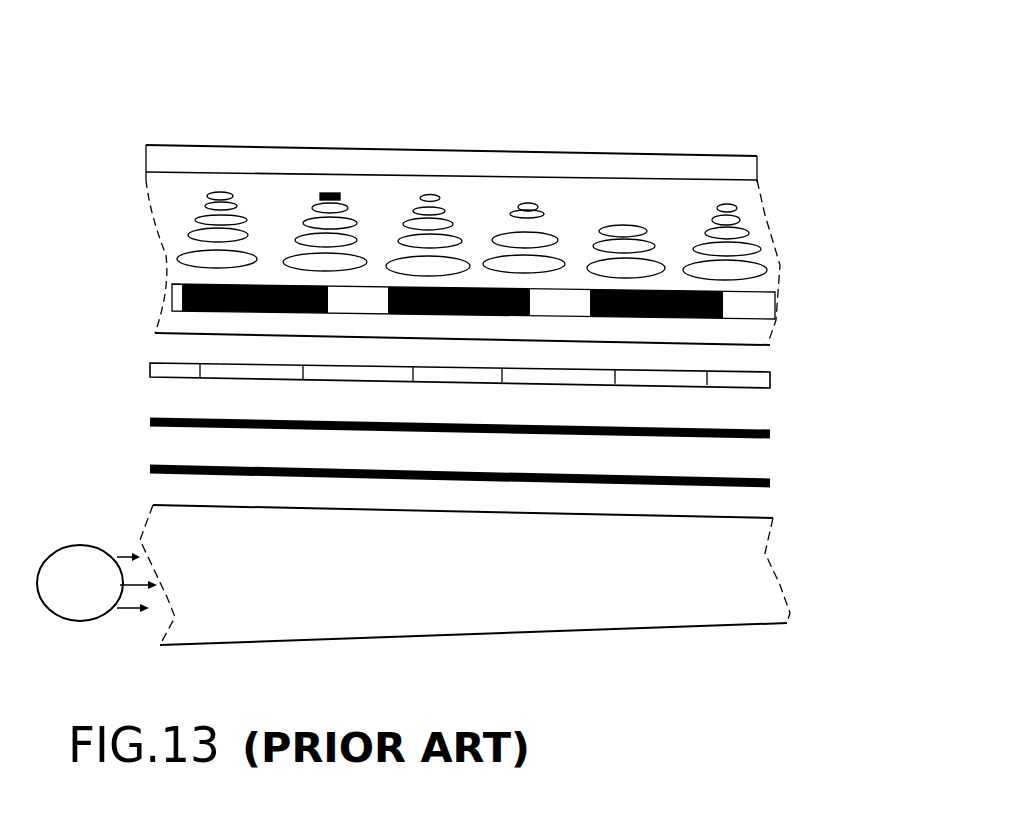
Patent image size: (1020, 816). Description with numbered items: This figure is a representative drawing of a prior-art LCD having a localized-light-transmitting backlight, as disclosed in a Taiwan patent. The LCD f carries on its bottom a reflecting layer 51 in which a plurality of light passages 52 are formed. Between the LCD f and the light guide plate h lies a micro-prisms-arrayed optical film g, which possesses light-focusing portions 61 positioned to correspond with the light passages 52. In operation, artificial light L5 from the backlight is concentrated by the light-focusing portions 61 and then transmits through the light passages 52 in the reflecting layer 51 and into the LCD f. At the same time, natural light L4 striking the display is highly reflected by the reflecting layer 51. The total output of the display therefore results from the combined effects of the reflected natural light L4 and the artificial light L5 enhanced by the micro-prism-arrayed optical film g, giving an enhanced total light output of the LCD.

The natural light L4 is at (260, 283).
The artificial light L5 is at (617, 420).
The LCD f is at (785, 202).
The light passages 52 is at (625, 252).
The reflecting layer 51 is at (705, 283).
The micro-prisms-arrayed optical film g is at (767, 388).
The light-focusing portions 61 is at (600, 373).
The light guide plate h is at (787, 587).